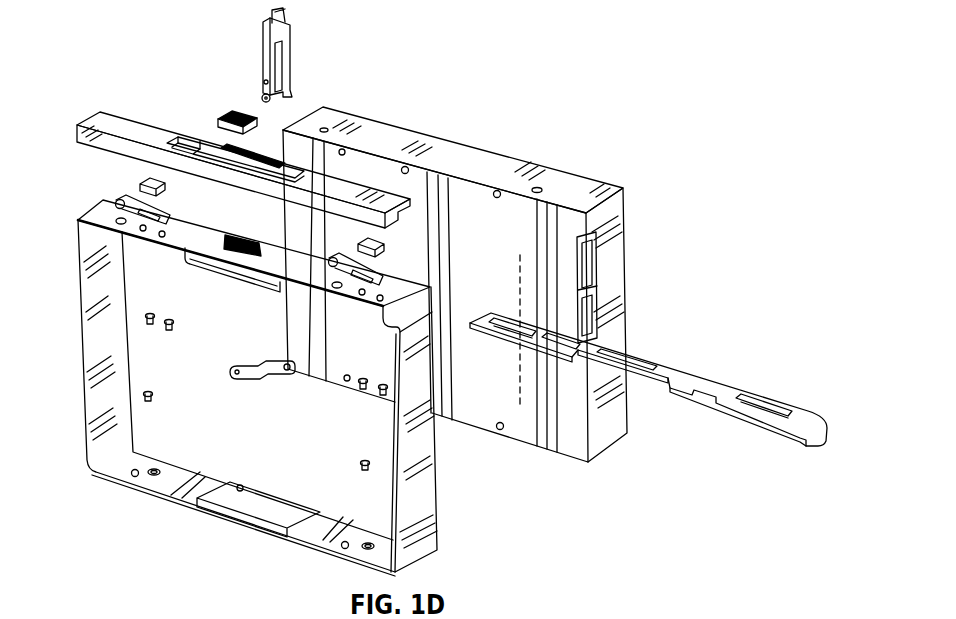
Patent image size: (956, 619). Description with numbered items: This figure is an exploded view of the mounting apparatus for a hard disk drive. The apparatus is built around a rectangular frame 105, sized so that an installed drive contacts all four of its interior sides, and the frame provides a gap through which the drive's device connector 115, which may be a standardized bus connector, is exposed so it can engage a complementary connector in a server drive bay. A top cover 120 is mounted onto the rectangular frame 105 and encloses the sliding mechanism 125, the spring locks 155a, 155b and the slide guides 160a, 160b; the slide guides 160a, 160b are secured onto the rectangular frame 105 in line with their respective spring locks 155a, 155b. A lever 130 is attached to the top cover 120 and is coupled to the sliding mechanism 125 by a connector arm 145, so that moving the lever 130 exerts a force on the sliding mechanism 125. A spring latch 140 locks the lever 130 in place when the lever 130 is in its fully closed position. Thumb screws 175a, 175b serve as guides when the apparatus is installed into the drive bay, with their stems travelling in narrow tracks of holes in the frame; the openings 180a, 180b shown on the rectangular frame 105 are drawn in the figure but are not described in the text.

The rectangular frame 105 is at (428, 498).
The device connector 115 is at (596, 271).
The top cover 120 is at (108, 118).
The sliding mechanism 125 is at (790, 412).
The lever 130 is at (283, 67).
The spring latch 140 is at (238, 110).
The connector arm 145 is at (248, 378).
The spring lock 155a is at (325, 290).
The spring lock 155b is at (112, 207).
The slide guide 160a is at (382, 252).
The slide guide 160b is at (140, 182).
The thumb screw 175a is at (363, 459).
The thumb screw 175b is at (145, 395).
The hole 180a is at (345, 541).
The hole 180b is at (137, 470).